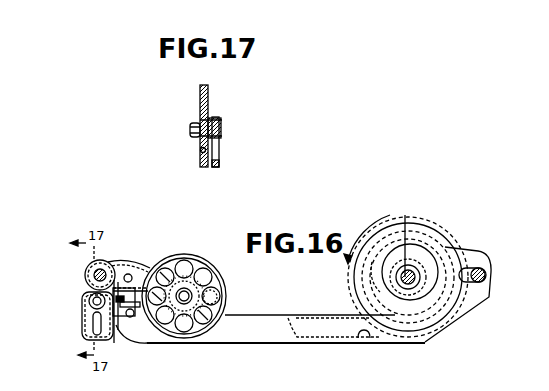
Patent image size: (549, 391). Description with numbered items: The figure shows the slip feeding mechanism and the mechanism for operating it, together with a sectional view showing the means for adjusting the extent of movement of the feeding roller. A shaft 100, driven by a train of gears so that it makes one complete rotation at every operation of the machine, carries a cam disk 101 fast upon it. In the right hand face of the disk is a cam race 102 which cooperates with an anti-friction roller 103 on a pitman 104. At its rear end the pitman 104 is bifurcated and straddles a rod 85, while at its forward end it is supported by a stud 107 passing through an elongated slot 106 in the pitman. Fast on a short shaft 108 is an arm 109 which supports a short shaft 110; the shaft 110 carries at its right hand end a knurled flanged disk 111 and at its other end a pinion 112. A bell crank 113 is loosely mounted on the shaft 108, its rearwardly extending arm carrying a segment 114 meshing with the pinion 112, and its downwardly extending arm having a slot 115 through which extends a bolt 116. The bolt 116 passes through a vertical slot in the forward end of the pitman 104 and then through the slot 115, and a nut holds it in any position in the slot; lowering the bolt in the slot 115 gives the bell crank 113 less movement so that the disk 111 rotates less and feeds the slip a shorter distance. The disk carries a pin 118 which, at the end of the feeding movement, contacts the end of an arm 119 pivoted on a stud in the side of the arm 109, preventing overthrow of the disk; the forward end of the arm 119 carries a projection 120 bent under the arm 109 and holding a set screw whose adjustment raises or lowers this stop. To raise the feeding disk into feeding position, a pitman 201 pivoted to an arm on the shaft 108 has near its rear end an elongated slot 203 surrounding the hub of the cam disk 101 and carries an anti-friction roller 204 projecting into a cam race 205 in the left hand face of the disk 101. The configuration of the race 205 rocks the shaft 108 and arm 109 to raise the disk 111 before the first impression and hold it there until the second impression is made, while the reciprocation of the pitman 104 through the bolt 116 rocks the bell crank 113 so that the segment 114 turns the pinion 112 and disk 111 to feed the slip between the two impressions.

In FIG. 16, the rod 85 is at (486, 273).
In FIG. 16, the shaft 100 is at (413, 274).
In FIG. 16, the cam disk 101 is at (410, 223).
In FIG. 16, the cam race 102 is at (430, 270).
In FIG. 16, the anti-friction roller 103 is at (440, 281).
In FIG. 17, the pitman 104 is at (216, 166).
In FIG. 16, the pitman 104 is at (466, 300).
In FIG. 16, the elongated slot 106 is at (136, 322).
In FIG. 16, the stud 107 is at (131, 350).
In FIG. 16, the short shaft 108 is at (104, 271).
In FIG. 16, the arm 109 is at (114, 268).
In FIG. 16, the short shaft 110 is at (218, 285).
In FIG. 16, the flanged disk 111 is at (220, 289).
In FIG. 16, the pinion 112 is at (188, 293).
In FIG. 17, the bell crank 113 is at (206, 100).
In FIG. 16, the bell crank 113 is at (86, 294).
In FIG. 16, the segment 114 is at (180, 282).
In FIG. 17, the slot 115 is at (200, 150).
In FIG. 16, the slot 115 is at (93, 323).
In FIG. 17, the bolt 116 is at (216, 128).
In FIG. 16, the bolt 116 is at (89, 302).
In FIG. 16, the pin 118 is at (216, 297).
In FIG. 16, the arm 119 is at (153, 272).
In FIG. 16, the projection 120 is at (116, 322).
In FIG. 16, the pitman 201 is at (361, 334).
In FIG. 16, the elongated slot 203 is at (405, 215).
In FIG. 16, the anti-friction roller 204 is at (372, 276).
In FIG. 16, the cam race 205 is at (364, 258).